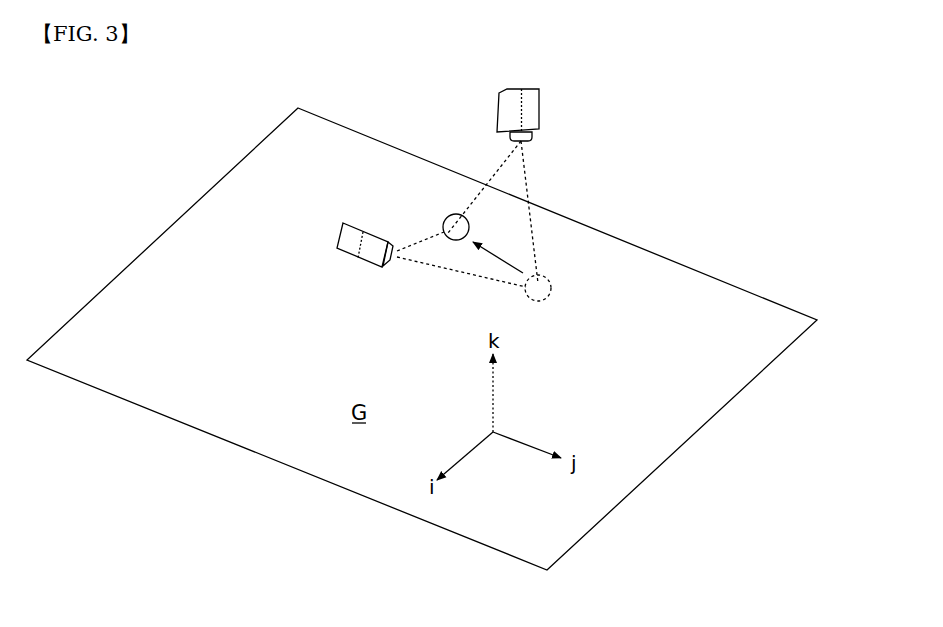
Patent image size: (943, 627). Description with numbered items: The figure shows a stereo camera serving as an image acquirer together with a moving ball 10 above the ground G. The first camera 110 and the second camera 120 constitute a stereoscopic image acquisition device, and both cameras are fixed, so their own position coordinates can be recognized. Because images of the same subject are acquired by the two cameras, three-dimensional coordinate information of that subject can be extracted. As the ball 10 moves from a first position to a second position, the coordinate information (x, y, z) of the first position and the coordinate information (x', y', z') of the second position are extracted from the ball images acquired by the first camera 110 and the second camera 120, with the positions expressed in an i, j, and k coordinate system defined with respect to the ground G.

The ball 10 is at (441, 238).
The first camera 110 is at (367, 255).
The second camera 120 is at (537, 112).